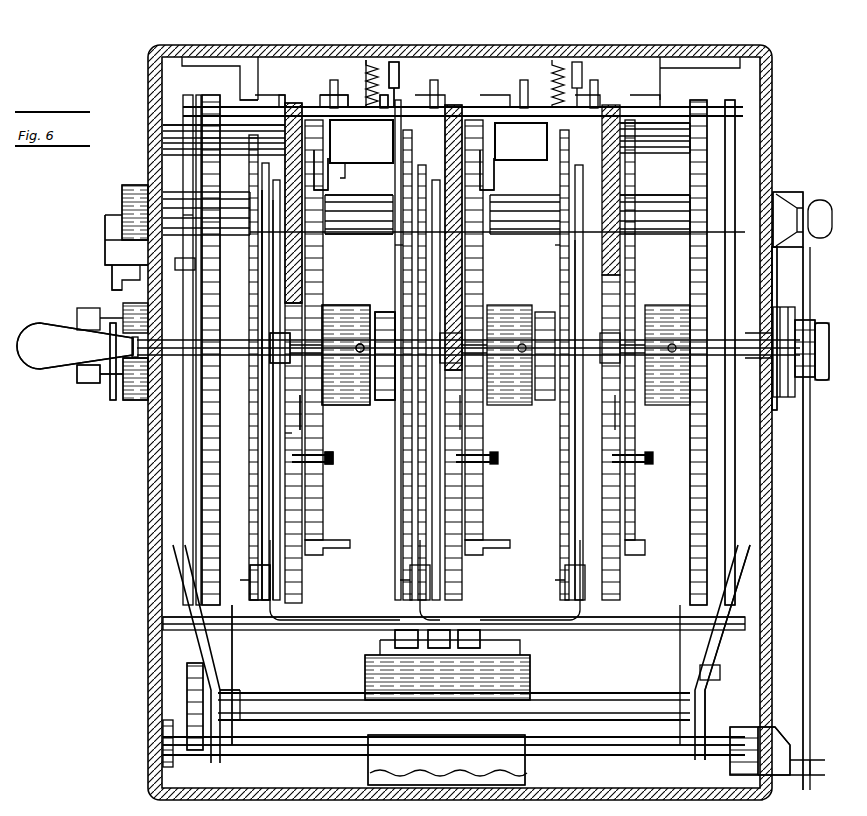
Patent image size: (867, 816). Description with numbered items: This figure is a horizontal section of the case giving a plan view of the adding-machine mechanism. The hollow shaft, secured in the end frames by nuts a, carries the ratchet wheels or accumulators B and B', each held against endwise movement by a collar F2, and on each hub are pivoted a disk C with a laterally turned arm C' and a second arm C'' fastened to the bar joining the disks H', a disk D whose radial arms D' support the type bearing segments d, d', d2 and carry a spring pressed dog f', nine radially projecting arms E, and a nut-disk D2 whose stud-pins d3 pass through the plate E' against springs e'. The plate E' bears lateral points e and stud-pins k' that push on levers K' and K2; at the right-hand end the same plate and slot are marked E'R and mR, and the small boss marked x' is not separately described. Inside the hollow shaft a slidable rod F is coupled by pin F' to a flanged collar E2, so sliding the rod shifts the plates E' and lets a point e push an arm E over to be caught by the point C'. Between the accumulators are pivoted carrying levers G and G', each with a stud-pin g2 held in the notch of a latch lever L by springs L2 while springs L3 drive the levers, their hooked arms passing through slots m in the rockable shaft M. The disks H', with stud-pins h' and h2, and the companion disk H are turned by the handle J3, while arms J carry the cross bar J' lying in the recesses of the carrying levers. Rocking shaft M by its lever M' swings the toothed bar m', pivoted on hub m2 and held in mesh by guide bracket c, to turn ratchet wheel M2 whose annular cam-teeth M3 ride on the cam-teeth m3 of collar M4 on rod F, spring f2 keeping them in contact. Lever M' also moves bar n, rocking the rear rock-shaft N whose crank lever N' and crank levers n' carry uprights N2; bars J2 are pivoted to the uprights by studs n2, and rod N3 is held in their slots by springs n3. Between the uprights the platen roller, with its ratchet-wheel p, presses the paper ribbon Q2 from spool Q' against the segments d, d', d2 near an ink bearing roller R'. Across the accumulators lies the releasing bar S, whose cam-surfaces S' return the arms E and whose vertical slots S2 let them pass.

The springs L2 is at (394, 60).
The springs L3 is at (372, 95).
The releasing bar S is at (251, 86).
The cam-surfaces S' is at (278, 85).
The vertical slots S2 is at (322, 95).
The cross bar J' is at (463, 102).
The latch lever L is at (386, 92).
The stud-pin g2 is at (380, 102).
The stud-pins k' is at (356, 162).
The transverse slots m is at (359, 185).
The lever K' is at (329, 184).
The rockable shaft M is at (359, 225).
The carrying lever G is at (384, 250).
The plate E' is at (256, 200).
The ratchet wheel B' is at (418, 237).
The ratchet wheel B is at (264, 203).
The radially projecting arms E is at (504, 141).
The lever K2 is at (497, 195).
The carrying lever G' is at (541, 250).
The flanged collar E2 is at (350, 310).
The collar F2 is at (385, 356).
The pin F' is at (352, 362).
The collar x' is at (289, 343).
The lateral points e is at (298, 401).
The arm C'' is at (248, 395).
The nut-disk D2 is at (292, 437).
The gear R' is at (383, 373).
The stud-pins d3 is at (333, 455).
The springs e' is at (308, 471).
The disk C is at (244, 395).
The disk D is at (287, 400).
The spring pressed dog f' is at (247, 581).
The arms D' is at (454, 606).
The arm C' is at (554, 420).
The handle J3 is at (75, 346).
The collar M4 is at (77, 365).
The cam-teeth m3 is at (100, 380).
The annular cam-teeth M3 is at (110, 380).
The ratchet wheel M2 is at (123, 400).
The hub m2 is at (122, 190).
The toothed bar m' is at (107, 240).
The guide bracket c is at (116, 272).
The disks H' is at (211, 349).
The stud-pin h' is at (198, 204).
The stud-pin h2 is at (190, 268).
The shaft E'R is at (655, 134).
The shaft mR is at (655, 200).
The rack H is at (698, 352).
The arms J is at (735, 352).
The lever M' is at (791, 201).
The spring f2 is at (798, 320).
The nuts a is at (778, 334).
The slidable rod F is at (804, 392).
The bar n is at (791, 518).
The uprights N2 is at (228, 690).
The bars J2 is at (712, 660).
The ratchet-wheel p is at (187, 688).
The studs n2 is at (454, 704).
The rod N3 is at (345, 748).
The springs n3 is at (232, 745).
The crank levers n' is at (454, 770).
The type bearing segment d is at (405, 655).
The type bearing segment d' is at (437, 655).
The type bearing segment d2 is at (468, 650).
The spool of paper Q' is at (463, 668).
The paper ribbon Q2 is at (525, 772).
The rock-shaft N is at (733, 755).
The crank lever N' is at (778, 766).